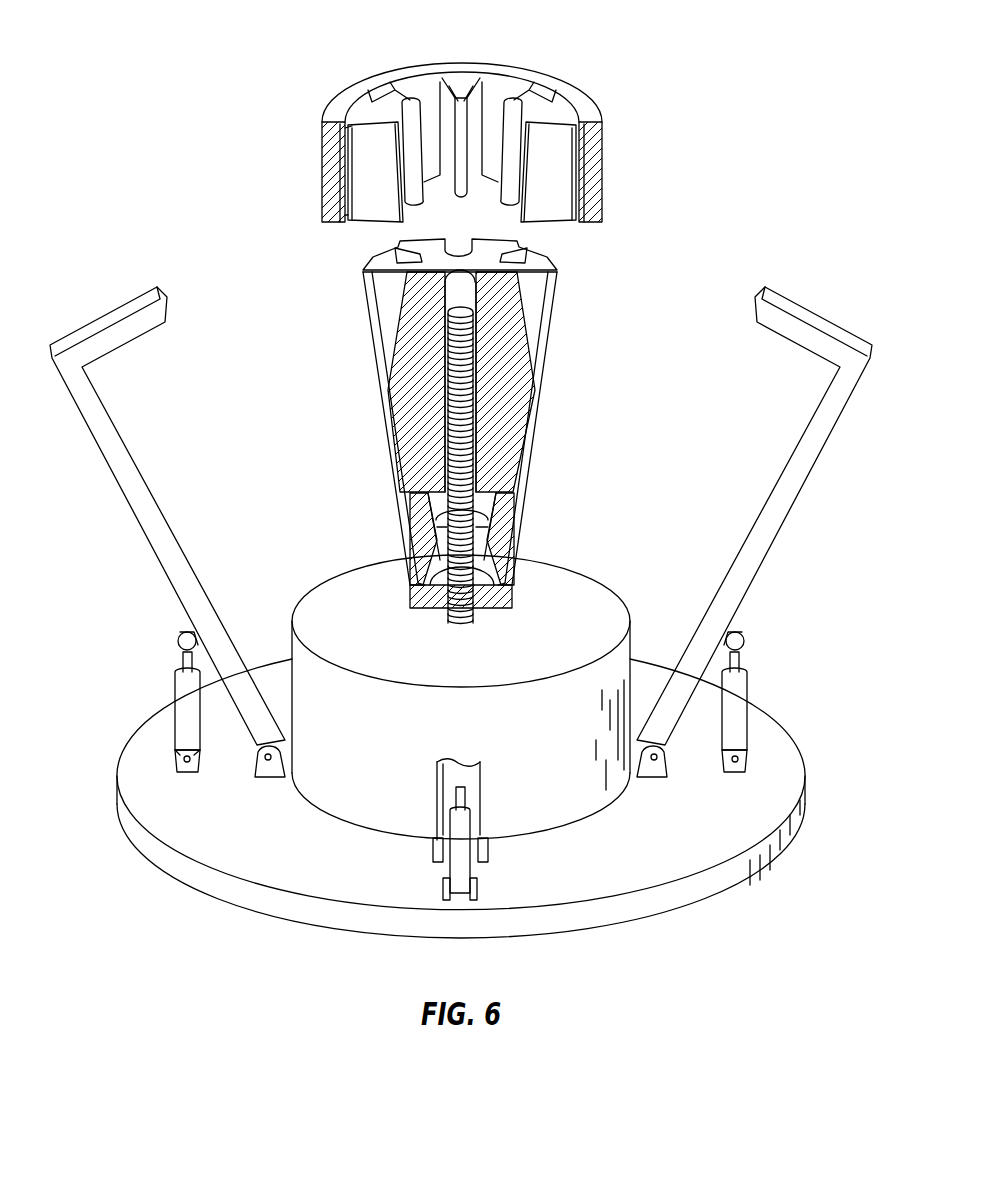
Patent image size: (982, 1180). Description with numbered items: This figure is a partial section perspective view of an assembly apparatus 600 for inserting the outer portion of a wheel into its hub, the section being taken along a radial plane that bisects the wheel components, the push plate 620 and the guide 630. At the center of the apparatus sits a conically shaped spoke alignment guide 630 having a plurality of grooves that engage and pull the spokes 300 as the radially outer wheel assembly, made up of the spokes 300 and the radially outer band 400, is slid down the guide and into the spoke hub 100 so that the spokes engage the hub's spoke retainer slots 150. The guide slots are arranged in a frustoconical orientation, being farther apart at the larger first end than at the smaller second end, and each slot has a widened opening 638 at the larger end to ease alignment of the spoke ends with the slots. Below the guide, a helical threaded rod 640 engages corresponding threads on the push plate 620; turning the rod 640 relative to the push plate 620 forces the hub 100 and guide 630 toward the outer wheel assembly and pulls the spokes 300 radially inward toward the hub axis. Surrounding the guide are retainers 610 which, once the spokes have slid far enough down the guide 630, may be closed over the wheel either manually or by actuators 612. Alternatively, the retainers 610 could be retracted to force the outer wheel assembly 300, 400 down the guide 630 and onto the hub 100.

The assembly apparatus 600 is at (145, 62).
The radially outer band 400 is at (600, 178).
The spokes 300 is at (553, 202).
The widened opening 638 is at (535, 300).
The spoke alignment guide 630 is at (510, 400).
The spoke hub 100 is at (500, 525).
The spoke retainer slots 150 is at (512, 563).
The push plate 620 is at (503, 597).
The helical threaded rod 640 is at (462, 625).
The retainers 610 is at (127, 508).
The actuators 612 is at (173, 712).